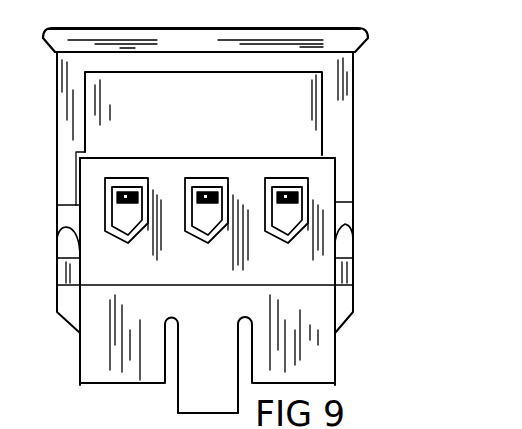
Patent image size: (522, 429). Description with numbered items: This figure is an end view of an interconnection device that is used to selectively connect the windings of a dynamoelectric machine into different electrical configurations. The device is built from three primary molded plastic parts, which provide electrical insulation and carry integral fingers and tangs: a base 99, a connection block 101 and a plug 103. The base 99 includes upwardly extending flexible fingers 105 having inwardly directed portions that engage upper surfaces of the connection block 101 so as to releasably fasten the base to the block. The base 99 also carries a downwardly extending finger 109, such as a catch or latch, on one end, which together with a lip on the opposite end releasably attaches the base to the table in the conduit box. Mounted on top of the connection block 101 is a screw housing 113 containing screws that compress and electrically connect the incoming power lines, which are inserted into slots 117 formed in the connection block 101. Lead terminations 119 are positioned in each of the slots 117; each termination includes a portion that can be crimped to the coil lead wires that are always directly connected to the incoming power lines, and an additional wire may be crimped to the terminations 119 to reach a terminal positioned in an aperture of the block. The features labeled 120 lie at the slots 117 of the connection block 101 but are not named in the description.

The base 99 is at (336, 348).
The connection block 101 is at (337, 217).
The plug 103 is at (355, 75).
The flexible fingers 105 is at (72, 238).
The finger 109 is at (187, 397).
The screw housing 113 is at (325, 116).
The slots 117 is at (128, 224).
The lead terminations 119 is at (125, 178).
The terminal slots 120 is at (148, 193).